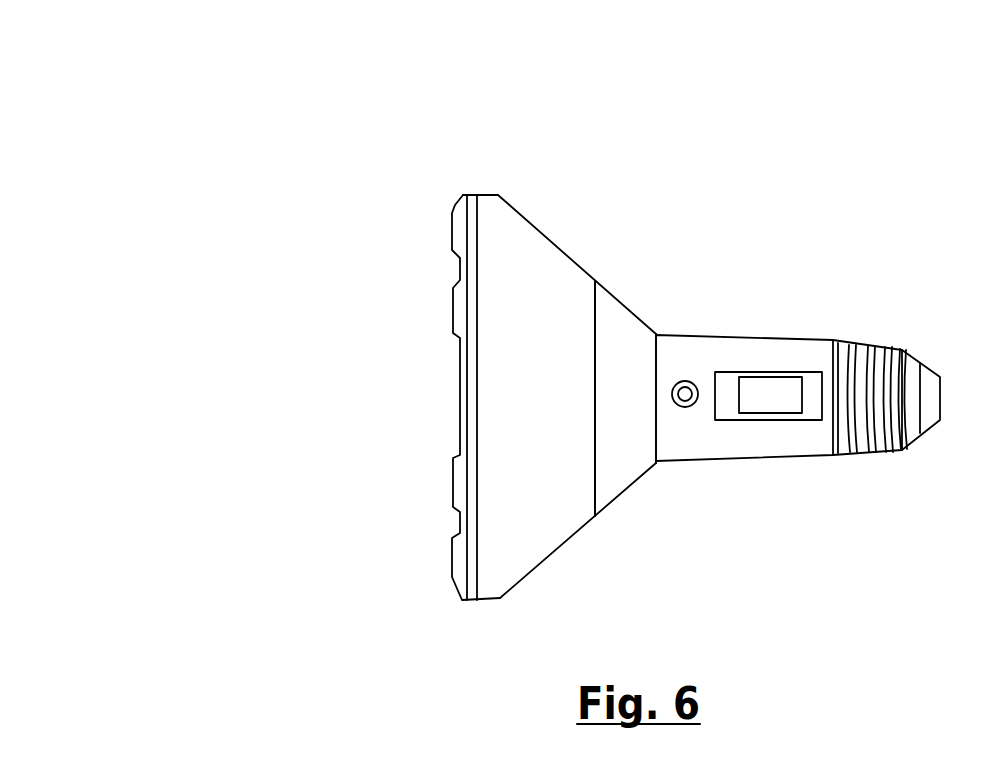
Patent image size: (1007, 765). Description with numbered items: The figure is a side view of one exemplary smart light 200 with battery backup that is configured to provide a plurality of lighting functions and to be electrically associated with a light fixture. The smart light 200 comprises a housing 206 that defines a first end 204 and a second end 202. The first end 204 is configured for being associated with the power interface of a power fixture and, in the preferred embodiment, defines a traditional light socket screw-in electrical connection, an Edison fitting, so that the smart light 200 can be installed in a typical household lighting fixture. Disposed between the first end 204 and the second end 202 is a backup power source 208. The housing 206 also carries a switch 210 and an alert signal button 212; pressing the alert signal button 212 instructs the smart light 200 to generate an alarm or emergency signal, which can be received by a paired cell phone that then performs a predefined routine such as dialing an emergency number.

The smart light 200 is at (390, 277).
The second end 202 is at (508, 252).
The first end 204 is at (903, 345).
The housing 206 is at (733, 335).
The backup power source 208 is at (619, 332).
The switch 210 is at (752, 410).
The alert signal button 212 is at (683, 408).